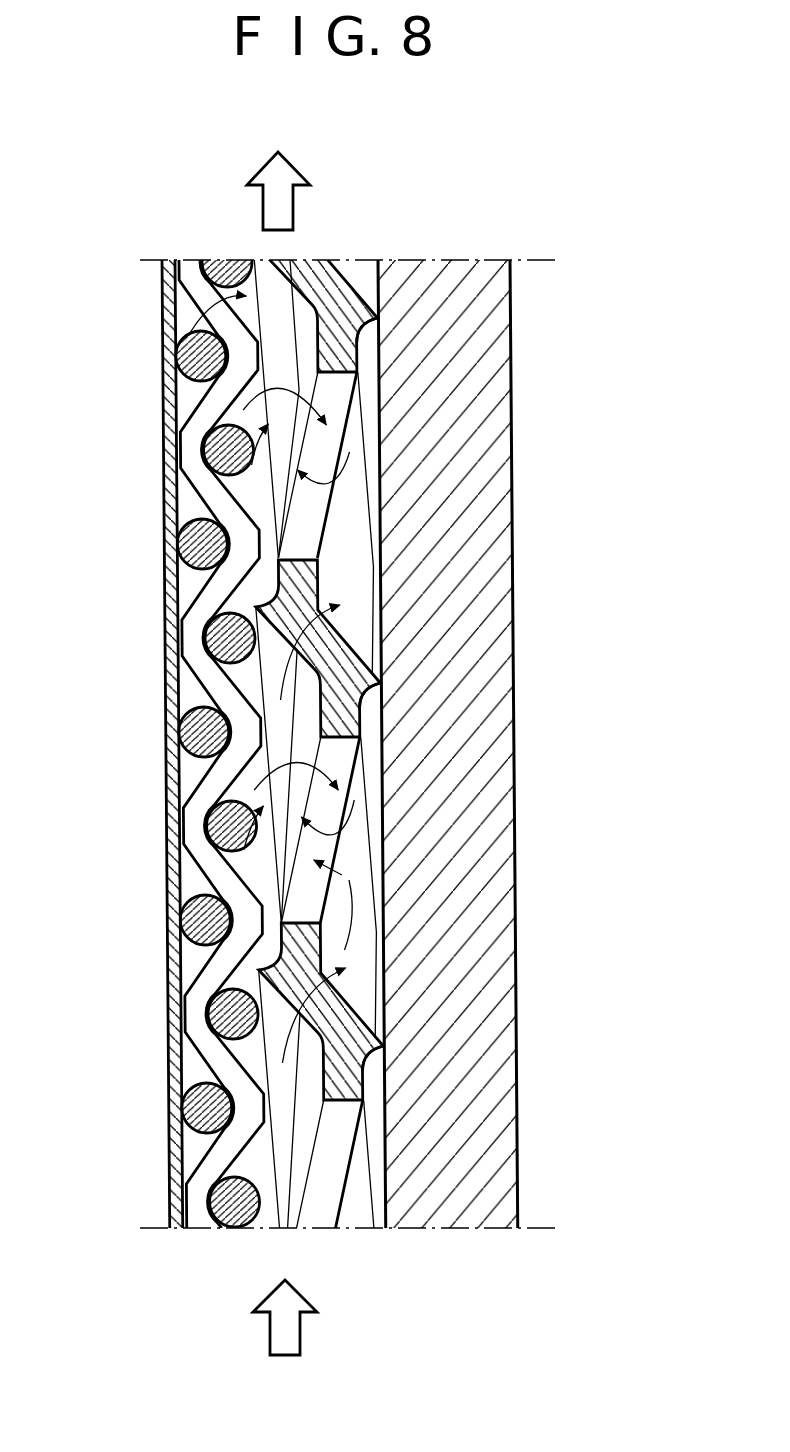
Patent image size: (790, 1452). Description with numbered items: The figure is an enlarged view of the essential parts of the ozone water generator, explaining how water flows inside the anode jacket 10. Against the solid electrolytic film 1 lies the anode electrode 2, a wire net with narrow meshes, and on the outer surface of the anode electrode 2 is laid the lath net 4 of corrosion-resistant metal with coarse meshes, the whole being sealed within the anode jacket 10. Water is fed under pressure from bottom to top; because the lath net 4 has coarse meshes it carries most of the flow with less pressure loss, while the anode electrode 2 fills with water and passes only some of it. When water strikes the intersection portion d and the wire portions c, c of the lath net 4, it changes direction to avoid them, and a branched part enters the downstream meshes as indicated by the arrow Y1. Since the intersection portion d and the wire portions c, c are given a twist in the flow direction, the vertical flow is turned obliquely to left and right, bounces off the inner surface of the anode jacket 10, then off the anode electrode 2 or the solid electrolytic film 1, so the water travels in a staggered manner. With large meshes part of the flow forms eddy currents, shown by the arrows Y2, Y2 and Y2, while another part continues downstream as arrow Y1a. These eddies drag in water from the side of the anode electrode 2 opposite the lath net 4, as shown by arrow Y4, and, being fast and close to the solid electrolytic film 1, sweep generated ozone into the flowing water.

The solid electrolytic film 1 is at (161, 302).
The anode electrode 2 is at (189, 1103).
The lath net 4 is at (318, 283).
The anode jacket 10 is at (502, 602).
The arrow Y1 is at (284, 1039).
The arrow Y1a is at (276, 659).
The arrows Y2 (eddy currents) Y2 is at (276, 840).
The arrow Y4 is at (190, 883).
The wire portions (mesh portions) c is at (277, 360).
The intersection portion d is at (350, 325).